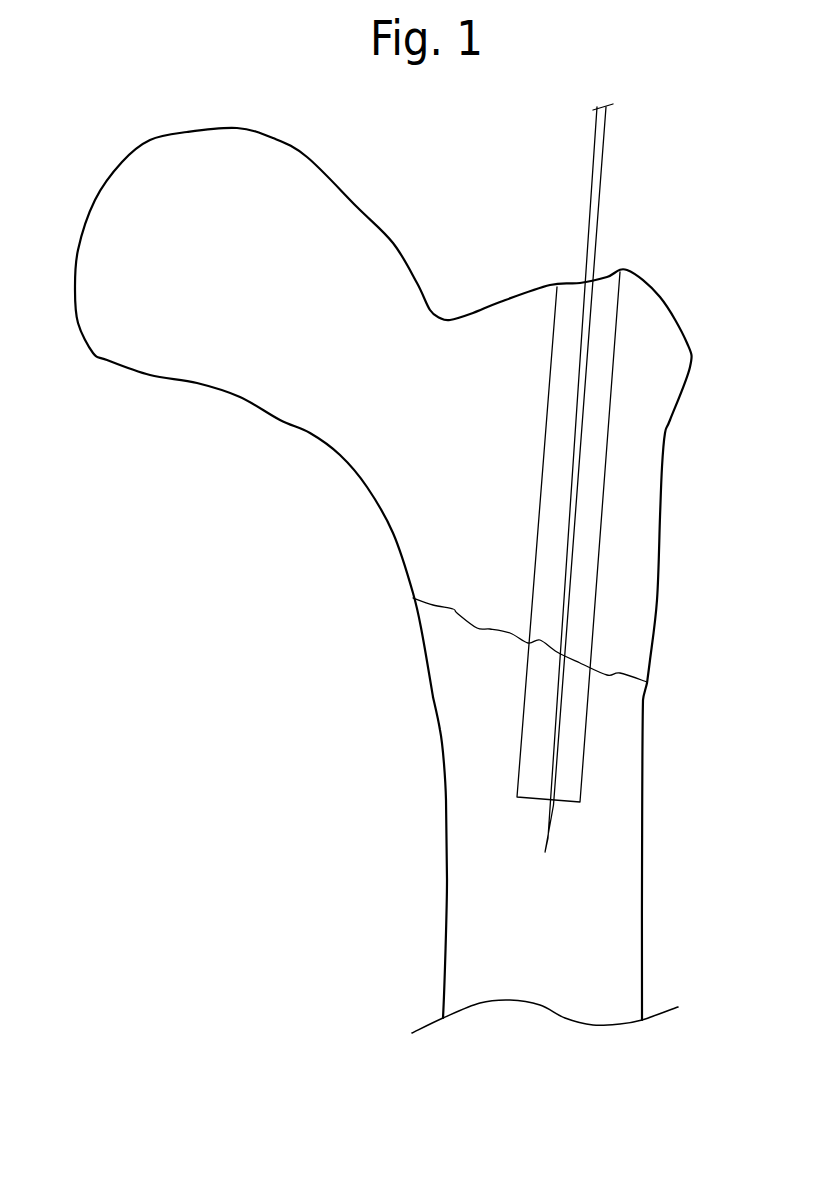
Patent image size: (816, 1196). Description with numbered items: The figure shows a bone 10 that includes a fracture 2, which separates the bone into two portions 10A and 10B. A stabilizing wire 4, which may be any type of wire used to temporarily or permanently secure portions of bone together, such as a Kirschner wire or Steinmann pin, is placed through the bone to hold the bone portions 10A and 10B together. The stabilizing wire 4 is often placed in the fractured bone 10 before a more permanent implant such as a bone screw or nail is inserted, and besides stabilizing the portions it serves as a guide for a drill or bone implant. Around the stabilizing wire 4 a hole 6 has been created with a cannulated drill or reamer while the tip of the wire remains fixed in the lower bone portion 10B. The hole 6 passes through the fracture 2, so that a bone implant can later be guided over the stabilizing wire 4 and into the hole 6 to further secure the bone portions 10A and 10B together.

The bone 10 is at (380, 573).
The bone portion 10A is at (310, 434).
The bone portion 10B is at (443, 778).
The fracture 2 is at (453, 609).
The stabilizing wire 4 is at (602, 182).
The hole 6 is at (603, 523).